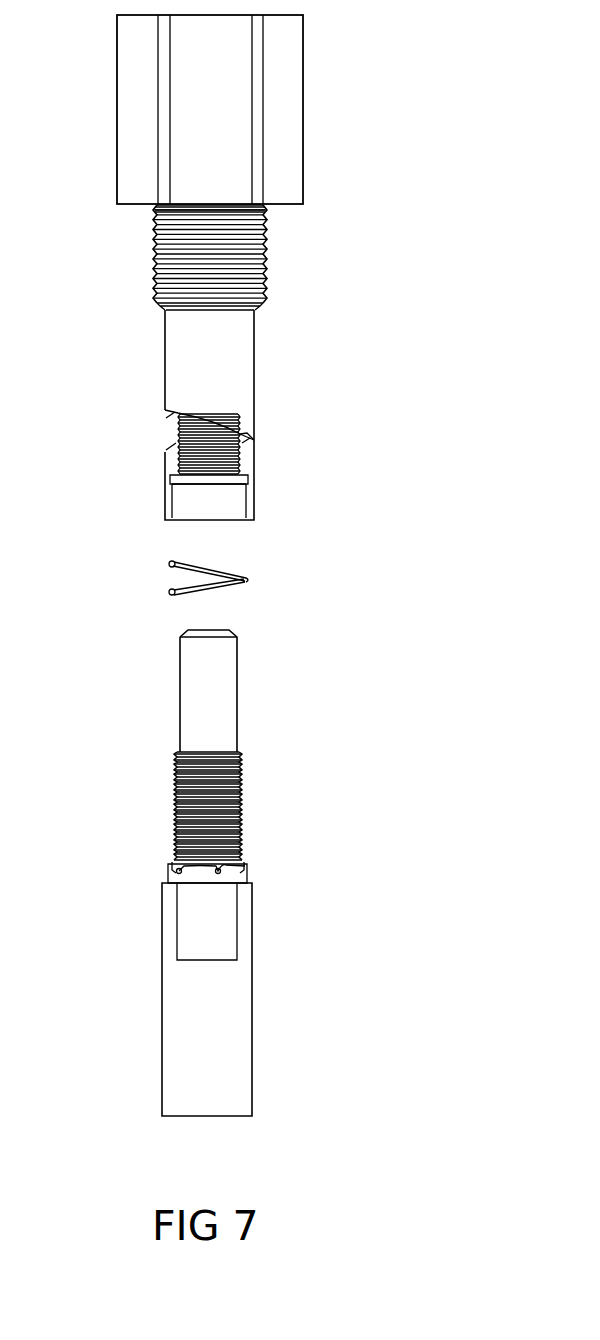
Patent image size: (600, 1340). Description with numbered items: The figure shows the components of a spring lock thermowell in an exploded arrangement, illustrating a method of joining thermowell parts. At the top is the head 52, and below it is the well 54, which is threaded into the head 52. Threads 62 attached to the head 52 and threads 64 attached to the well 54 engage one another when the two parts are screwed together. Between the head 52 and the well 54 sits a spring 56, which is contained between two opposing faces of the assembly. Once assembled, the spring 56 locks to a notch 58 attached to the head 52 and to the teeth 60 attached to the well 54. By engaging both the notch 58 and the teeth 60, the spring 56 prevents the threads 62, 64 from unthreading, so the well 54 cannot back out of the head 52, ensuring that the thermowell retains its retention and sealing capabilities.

The head 52 is at (140, 165).
The well 54 is at (183, 1088).
The spring 56 is at (170, 590).
The notch 58 is at (178, 440).
The teeth 60 is at (245, 866).
The threads 62 is at (243, 465).
The threads 64 is at (240, 810).